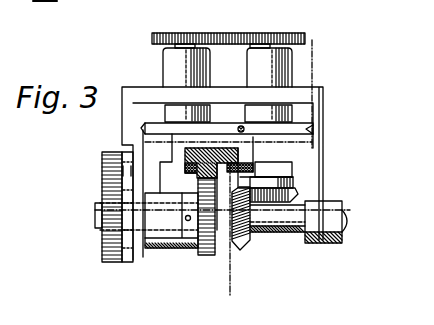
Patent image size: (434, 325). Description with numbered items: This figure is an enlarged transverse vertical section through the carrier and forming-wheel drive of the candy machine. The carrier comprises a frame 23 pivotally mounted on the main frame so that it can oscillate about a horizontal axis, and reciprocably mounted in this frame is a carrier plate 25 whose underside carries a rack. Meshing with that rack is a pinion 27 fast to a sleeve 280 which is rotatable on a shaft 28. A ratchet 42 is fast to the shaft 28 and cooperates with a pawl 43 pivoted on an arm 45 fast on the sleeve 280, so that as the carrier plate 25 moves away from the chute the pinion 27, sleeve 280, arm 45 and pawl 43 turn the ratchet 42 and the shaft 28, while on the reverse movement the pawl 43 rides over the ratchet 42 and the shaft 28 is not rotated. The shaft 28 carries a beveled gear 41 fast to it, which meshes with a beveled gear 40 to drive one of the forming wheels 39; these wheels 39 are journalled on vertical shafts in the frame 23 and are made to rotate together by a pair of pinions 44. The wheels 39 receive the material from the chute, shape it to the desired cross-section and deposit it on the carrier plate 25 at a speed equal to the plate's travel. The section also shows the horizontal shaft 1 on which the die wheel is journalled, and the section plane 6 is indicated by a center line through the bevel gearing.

The horizontal shaft 1 is at (306, 47).
The section line 6 is at (238, 239).
The frame 23 is at (323, 152).
The carrier plate 25 is at (184, 158).
The pinion 27 is at (207, 256).
The shaft 28 is at (279, 233).
The forming wheels 39 is at (311, 130).
The beveled gear 40 is at (292, 196).
The beveled gear 41 is at (243, 251).
The ratchet 42 is at (103, 260).
The pawl 43 is at (112, 178).
The pinions 44 is at (259, 30).
The arm 45 is at (126, 172).
The sleeve 280 is at (183, 248).